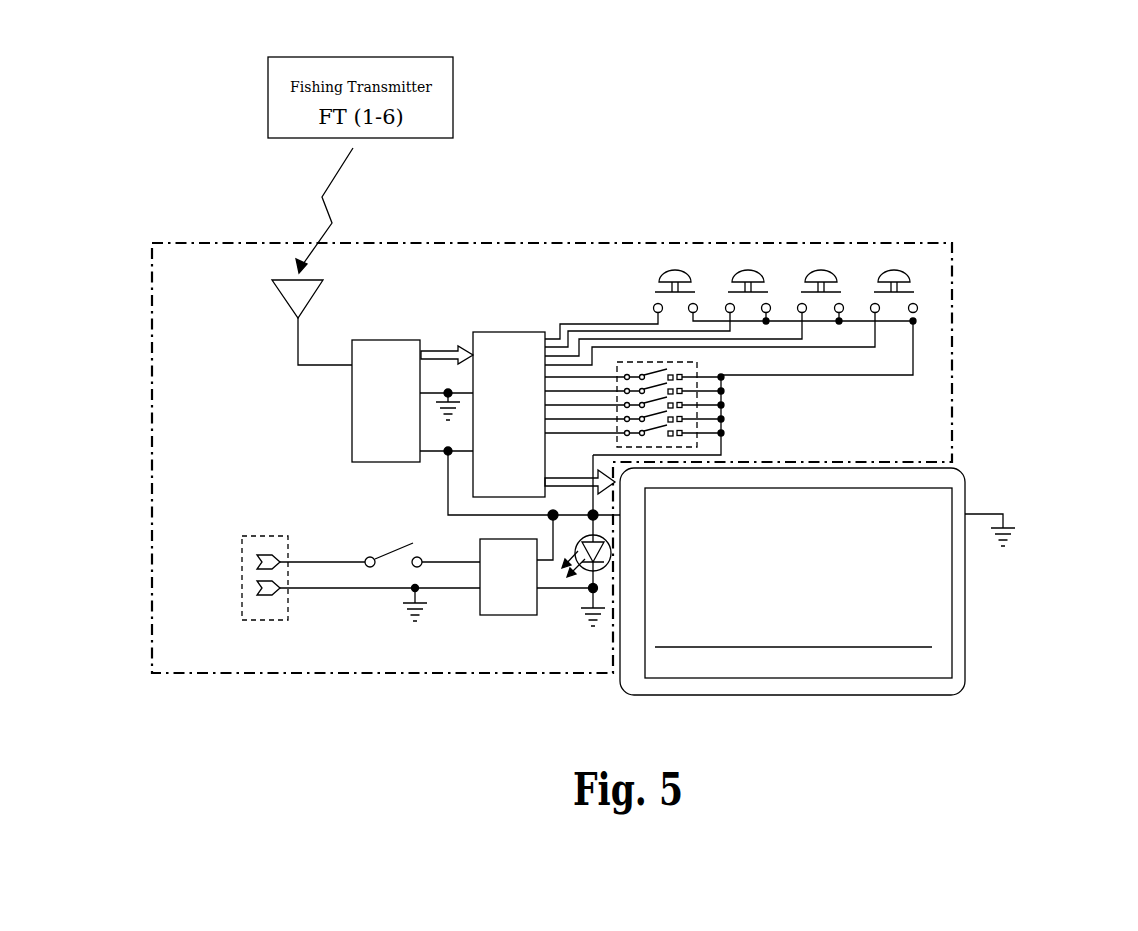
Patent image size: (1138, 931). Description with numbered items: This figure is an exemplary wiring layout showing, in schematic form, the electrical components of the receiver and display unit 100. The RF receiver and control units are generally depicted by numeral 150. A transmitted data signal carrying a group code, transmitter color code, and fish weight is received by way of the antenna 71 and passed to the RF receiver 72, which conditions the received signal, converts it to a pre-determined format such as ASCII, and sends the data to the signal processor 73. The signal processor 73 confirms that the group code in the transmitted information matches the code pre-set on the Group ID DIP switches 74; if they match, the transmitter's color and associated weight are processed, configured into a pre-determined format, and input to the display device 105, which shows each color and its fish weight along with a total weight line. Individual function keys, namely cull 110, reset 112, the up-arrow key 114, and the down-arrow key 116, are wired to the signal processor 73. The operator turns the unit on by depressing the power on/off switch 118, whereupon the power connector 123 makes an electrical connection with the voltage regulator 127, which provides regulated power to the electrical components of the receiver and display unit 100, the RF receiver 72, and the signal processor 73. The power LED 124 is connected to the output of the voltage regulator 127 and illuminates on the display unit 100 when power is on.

The antenna 71 is at (274, 282).
The RF receiver 72 is at (395, 340).
The signal processor 73 is at (500, 332).
The Group ID DIP switches 74 is at (697, 382).
The receiver and display unit 100 is at (979, 664).
The display device 105 is at (948, 570).
The cull key 110 is at (688, 252).
The reset key 112 is at (758, 250).
The up-arrow key 114 is at (832, 250).
The down-arrow key 116 is at (910, 250).
The power on/off switch 118 is at (393, 558).
The power connector 123 is at (260, 613).
The power LED 124 is at (580, 565).
The voltage regulator 127 is at (492, 615).
The RF receiver and control units 150 is at (950, 245).